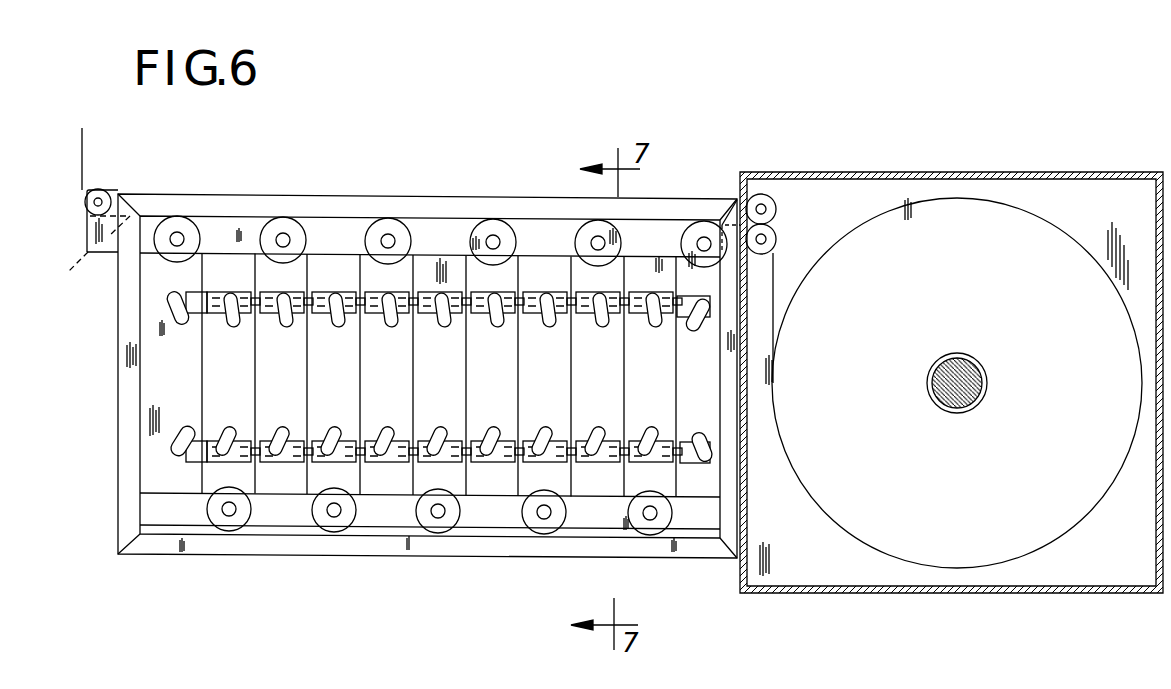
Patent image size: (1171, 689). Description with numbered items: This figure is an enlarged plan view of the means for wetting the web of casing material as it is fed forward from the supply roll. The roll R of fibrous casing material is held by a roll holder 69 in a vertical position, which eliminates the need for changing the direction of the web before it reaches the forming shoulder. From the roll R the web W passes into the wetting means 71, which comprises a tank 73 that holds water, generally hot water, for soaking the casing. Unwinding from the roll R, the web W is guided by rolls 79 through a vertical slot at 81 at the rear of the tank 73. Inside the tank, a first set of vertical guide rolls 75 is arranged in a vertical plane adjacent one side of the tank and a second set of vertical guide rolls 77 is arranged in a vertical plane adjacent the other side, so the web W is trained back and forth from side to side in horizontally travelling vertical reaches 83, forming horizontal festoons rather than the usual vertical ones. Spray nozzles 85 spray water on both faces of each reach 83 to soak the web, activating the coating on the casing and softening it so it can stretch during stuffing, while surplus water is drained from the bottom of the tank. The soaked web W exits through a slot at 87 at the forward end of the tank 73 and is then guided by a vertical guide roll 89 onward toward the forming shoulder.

The roll holder 69 is at (978, 594).
The wetting means 71 is at (226, 563).
The tank 73 is at (392, 558).
The first set of vertical guide rolls 75 is at (701, 223).
The second set of vertical guide rolls 77 is at (650, 536).
The rolls 79 is at (778, 238).
The vertical slot 81 is at (738, 225).
The reaches 83 is at (676, 394).
The spray nozzles 85 is at (703, 432).
The slot 87 is at (96, 247).
The vertical guide roll 89 is at (106, 192).
The web W is at (82, 155).
The roll R is at (1050, 548).